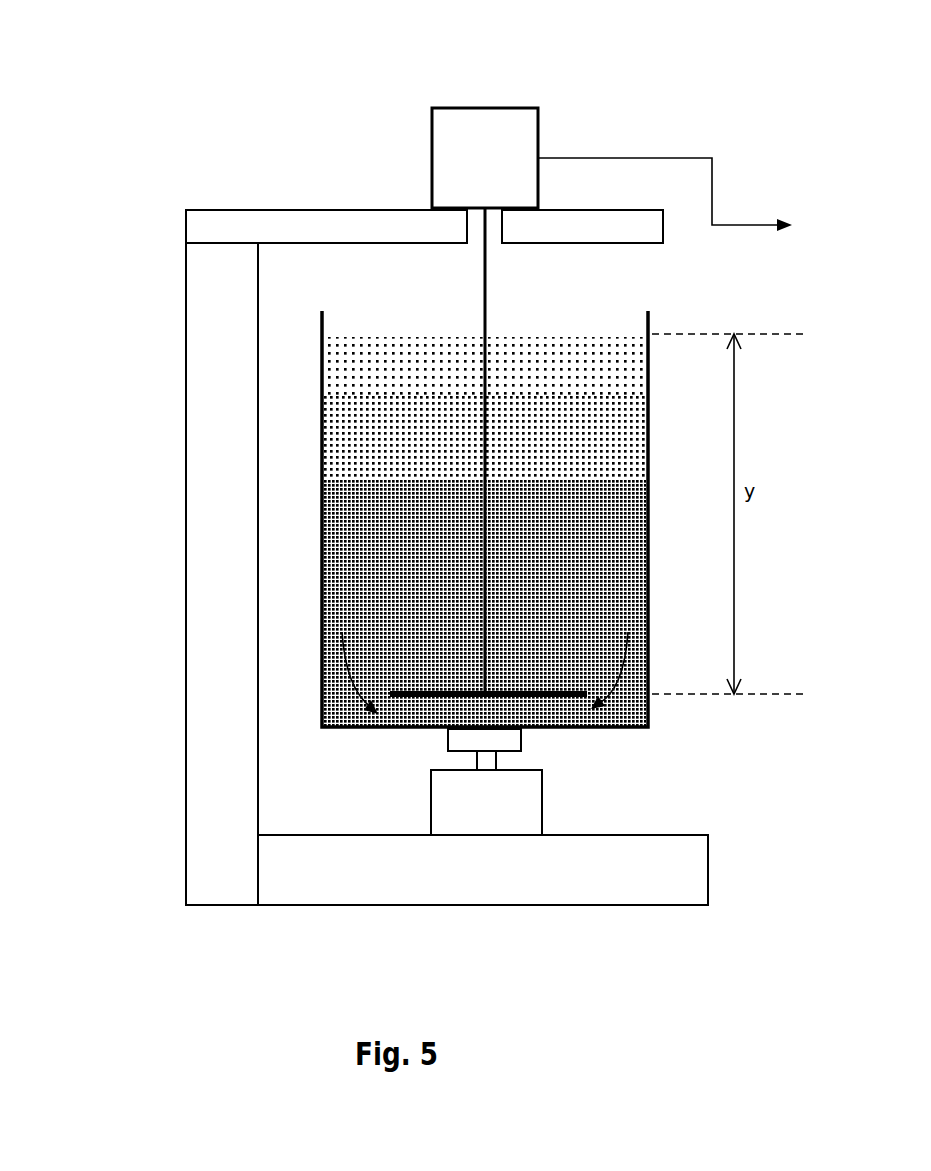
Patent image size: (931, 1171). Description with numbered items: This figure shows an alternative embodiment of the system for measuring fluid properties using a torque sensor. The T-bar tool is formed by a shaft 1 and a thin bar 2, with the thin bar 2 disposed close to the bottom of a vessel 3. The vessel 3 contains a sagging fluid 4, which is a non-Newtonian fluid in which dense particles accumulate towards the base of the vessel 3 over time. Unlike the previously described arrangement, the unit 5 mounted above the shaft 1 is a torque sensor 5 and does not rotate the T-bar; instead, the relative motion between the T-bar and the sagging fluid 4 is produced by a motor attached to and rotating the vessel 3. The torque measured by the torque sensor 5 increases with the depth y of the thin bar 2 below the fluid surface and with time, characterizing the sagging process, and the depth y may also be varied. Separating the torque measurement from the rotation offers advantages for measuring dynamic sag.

The shaft 1 is at (482, 270).
The thin bar 2 is at (538, 697).
The vessel 3 is at (316, 728).
The sagging fluid 4 is at (452, 510).
The torque sensor 5 is at (485, 107).